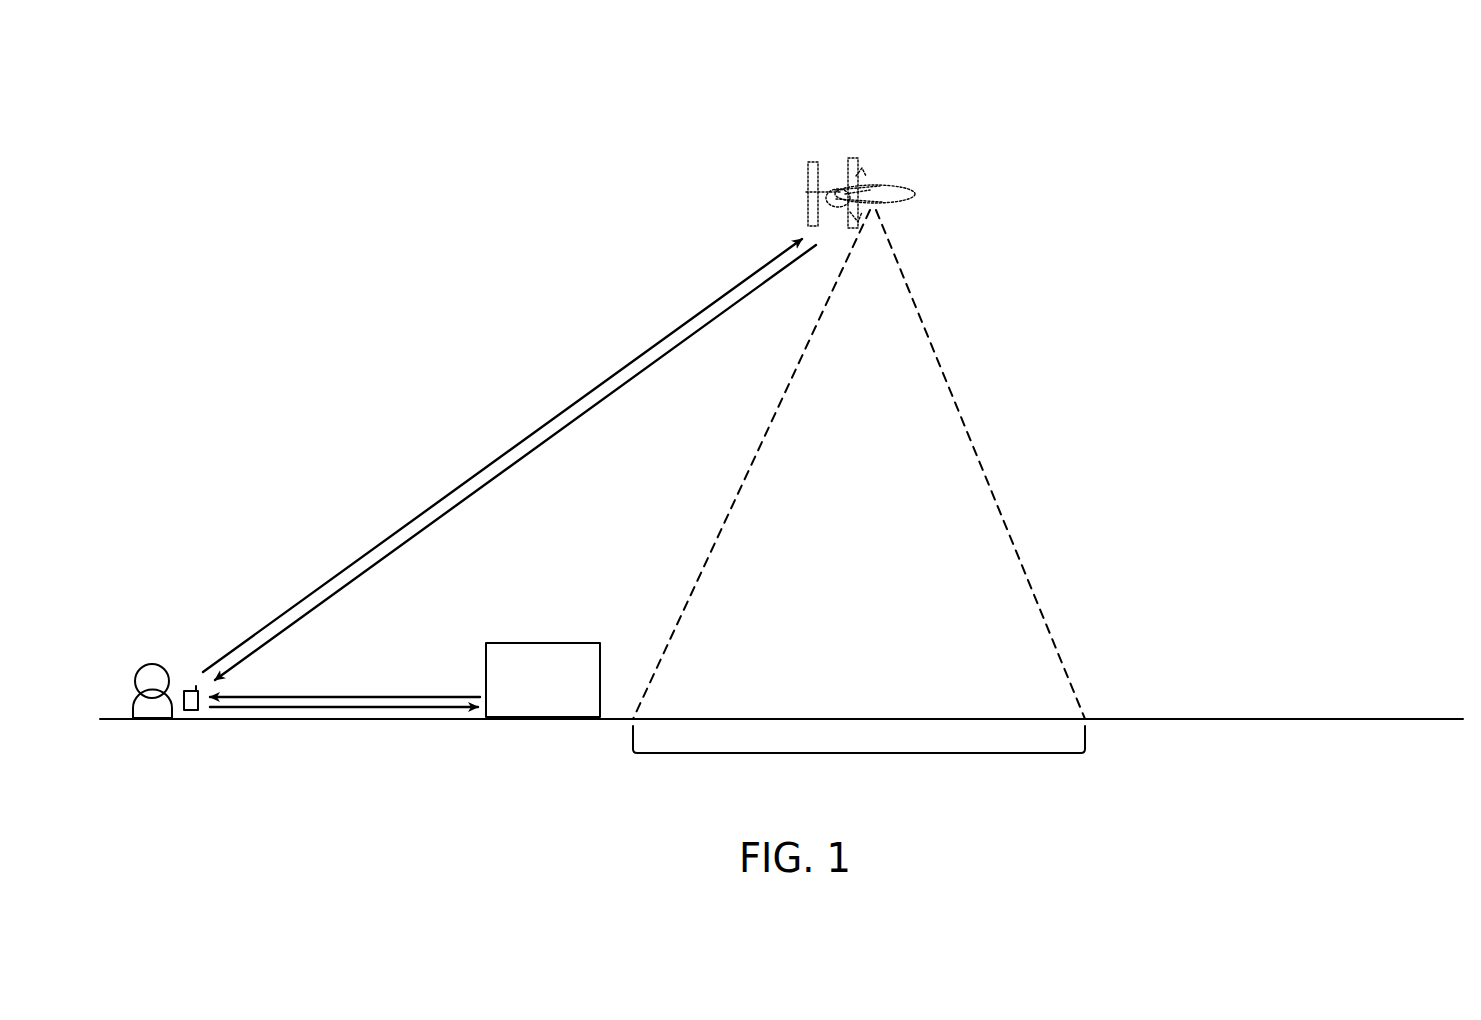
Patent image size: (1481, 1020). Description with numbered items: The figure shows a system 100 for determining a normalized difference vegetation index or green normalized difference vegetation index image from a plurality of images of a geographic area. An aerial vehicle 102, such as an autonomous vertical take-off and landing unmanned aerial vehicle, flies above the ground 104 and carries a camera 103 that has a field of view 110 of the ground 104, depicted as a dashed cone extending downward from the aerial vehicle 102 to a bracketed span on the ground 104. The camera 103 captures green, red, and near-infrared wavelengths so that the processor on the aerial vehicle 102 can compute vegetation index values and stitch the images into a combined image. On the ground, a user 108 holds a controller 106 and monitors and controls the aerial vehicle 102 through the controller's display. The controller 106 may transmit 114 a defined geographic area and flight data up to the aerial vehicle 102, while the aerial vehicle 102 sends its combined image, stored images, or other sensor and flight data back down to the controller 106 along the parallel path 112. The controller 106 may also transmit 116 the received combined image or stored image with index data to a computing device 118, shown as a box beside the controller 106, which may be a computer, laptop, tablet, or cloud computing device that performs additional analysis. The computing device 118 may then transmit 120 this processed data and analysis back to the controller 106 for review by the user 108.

The system 100 is at (1378, 130).
The aerial vehicle 102 is at (881, 182).
The camera 103 is at (876, 203).
The ground 104 is at (1422, 719).
The controller 106 is at (192, 712).
The user 108 is at (152, 663).
The field of view 110 is at (859, 753).
The control signal 112 is at (537, 448).
The transmission of geographic area and flight data 114 is at (667, 336).
The transmission of image data to computing device 116 is at (348, 720).
The computing device 118 is at (545, 721).
The transmission of processed data to controller 120 is at (348, 695).